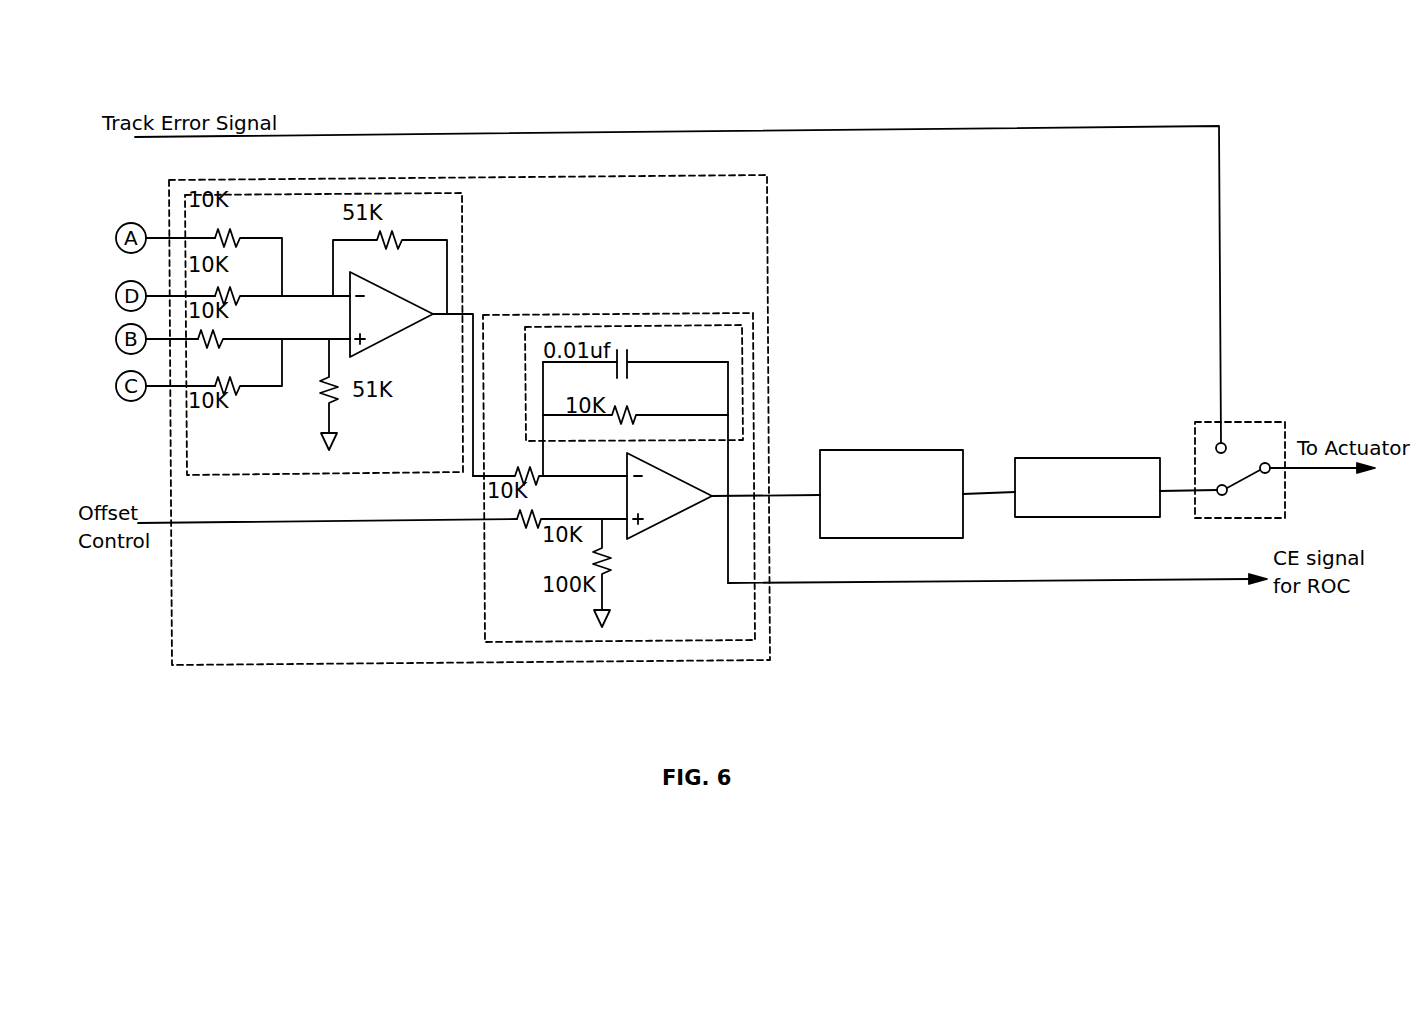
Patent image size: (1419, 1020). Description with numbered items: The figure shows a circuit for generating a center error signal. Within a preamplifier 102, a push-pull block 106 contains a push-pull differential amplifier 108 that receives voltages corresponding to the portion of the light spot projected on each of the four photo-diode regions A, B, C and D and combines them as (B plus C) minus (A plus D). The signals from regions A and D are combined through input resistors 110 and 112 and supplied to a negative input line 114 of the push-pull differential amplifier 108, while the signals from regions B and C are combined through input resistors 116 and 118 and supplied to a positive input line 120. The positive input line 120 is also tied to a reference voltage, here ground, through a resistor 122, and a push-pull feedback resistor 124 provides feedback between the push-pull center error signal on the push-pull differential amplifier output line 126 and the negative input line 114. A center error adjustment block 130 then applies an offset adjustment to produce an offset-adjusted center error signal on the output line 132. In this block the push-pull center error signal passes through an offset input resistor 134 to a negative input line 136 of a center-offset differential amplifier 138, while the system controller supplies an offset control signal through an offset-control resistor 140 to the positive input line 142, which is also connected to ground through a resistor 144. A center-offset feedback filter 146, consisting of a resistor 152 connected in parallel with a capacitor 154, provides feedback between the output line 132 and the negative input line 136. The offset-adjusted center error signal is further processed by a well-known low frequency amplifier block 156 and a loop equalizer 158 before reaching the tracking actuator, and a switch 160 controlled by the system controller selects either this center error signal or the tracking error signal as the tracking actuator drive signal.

The preamplifier 102 is at (767, 200).
The push-pull block 106 is at (462, 227).
The push-pull differential amplifier 108 is at (381, 291).
The input resistor 110 is at (232, 226).
The input resistor 112 is at (232, 287).
The negative input line 114 is at (315, 295).
The input resistor 116 is at (225, 331).
The input resistor 118 is at (229, 381).
The positive input line 120 is at (320, 338).
The resistor 122 is at (322, 381).
The push-pull feedback resistor 124 is at (383, 240).
The push-pull differential amplifier output line 126 is at (471, 312).
The center error adjustment block 130 is at (607, 315).
The output line 132 is at (783, 495).
The offset input resistor 134 is at (517, 470).
The negative input line 136 is at (618, 475).
The center-offset differential amplifier 138 is at (659, 478).
The offset-control resistor 140 is at (520, 525).
The positive input line 142 is at (612, 518).
The resistor 144 is at (608, 557).
The center-offset feedback filter 146 is at (690, 327).
The resistor 152 is at (633, 414).
The capacitor 154 is at (628, 358).
The low frequency amplifier block 156 is at (932, 450).
The loop equalizer 158 is at (1117, 458).
The switch 160 is at (1250, 422).